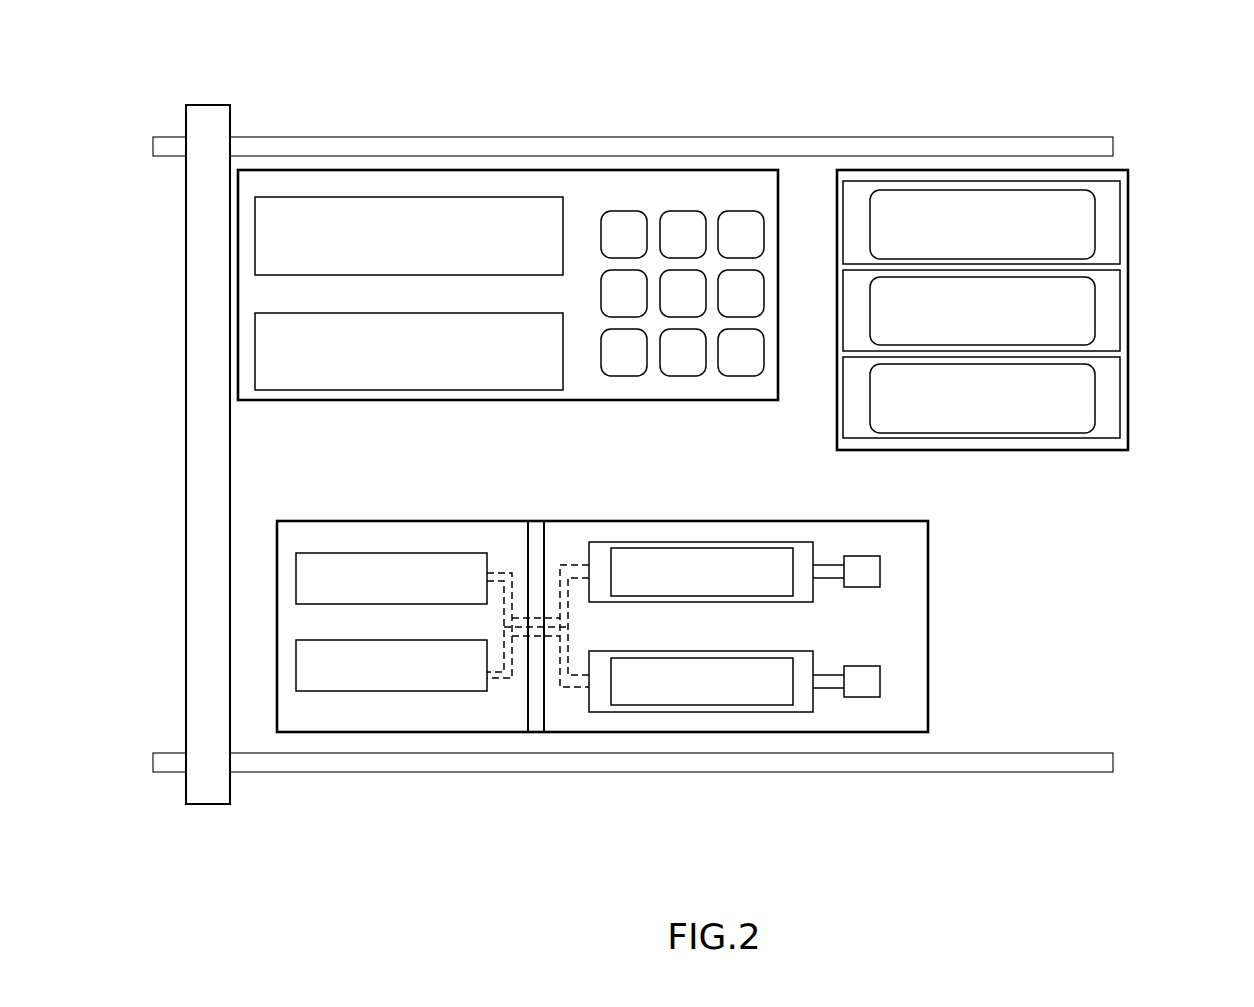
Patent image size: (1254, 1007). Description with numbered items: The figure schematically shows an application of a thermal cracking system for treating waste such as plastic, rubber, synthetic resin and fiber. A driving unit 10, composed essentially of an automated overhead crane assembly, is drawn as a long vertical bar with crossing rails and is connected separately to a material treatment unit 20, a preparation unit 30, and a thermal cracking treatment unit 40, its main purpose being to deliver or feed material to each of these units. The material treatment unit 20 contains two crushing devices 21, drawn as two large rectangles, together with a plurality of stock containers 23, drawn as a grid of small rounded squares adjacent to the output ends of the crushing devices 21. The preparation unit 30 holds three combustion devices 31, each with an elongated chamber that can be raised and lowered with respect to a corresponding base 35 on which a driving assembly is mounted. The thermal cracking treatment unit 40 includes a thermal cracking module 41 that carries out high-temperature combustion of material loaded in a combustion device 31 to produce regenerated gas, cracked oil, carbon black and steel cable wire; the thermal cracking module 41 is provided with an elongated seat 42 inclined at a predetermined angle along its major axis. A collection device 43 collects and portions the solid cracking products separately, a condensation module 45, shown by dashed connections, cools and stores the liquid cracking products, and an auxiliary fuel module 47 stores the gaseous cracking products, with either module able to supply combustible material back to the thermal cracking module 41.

The driving unit 10 is at (200, 96).
The material treatment unit 20 is at (468, 167).
The crushing device 21 is at (382, 196).
The stock container 23 is at (637, 210).
The preparation unit 30 is at (983, 165).
The combustion device 31 is at (1095, 222).
The base 35 is at (1088, 182).
The thermal cracking treatment unit 40 is at (867, 742).
The thermal cracking module 41 is at (680, 548).
The seat 42 is at (797, 542).
The collection device 43 is at (880, 572).
The condensation module 45 is at (488, 553).
The auxiliary fuel module 47 is at (453, 691).